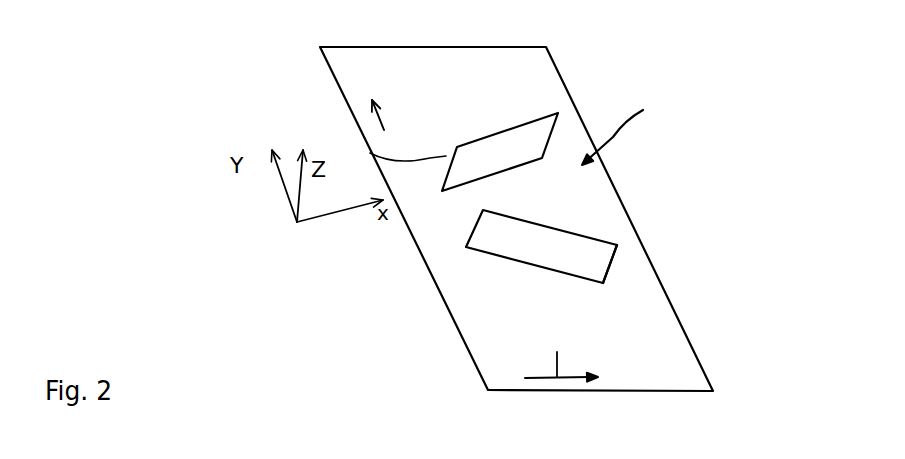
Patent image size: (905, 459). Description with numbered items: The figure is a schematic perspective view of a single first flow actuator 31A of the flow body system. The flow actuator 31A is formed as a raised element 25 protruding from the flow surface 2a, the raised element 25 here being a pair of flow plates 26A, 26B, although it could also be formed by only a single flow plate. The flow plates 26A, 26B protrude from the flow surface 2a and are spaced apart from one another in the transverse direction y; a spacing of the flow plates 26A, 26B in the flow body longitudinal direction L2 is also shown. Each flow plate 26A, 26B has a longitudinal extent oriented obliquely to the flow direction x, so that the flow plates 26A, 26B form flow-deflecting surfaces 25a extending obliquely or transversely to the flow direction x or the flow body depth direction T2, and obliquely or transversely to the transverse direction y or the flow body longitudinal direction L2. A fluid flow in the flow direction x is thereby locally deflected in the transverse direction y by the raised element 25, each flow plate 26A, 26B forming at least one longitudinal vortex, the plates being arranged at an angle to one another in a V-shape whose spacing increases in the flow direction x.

The flow surface 2a is at (390, 90).
The flow plate 26B is at (548, 135).
The raised element 25 is at (487, 263).
The flow plate 26A is at (603, 262).
The flow-deflecting surface 25a is at (446, 157).
The first flow actuator 31A is at (649, 129).
The flow body longitudinal direction L2 is at (381, 118).
The flow body depth direction T2 is at (561, 352).